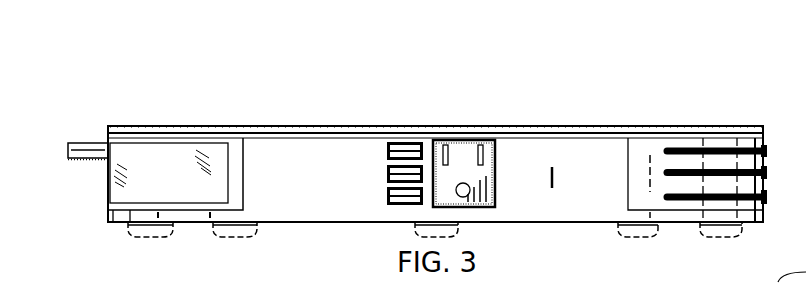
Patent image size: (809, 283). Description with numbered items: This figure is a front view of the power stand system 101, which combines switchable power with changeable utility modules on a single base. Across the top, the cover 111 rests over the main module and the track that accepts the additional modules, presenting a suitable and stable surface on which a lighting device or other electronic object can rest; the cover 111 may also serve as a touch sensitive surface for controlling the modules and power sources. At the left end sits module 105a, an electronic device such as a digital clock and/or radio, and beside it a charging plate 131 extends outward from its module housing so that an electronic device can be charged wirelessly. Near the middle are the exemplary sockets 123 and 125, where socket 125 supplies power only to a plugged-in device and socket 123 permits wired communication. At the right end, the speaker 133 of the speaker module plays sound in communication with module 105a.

The power stand system 101 is at (118, 48).
The cover 111 is at (258, 126).
The charging plate 131 is at (70, 143).
The module 105a is at (143, 175).
The socket 123 is at (387, 157).
The socket 125 is at (464, 150).
The speaker 133 is at (762, 148).